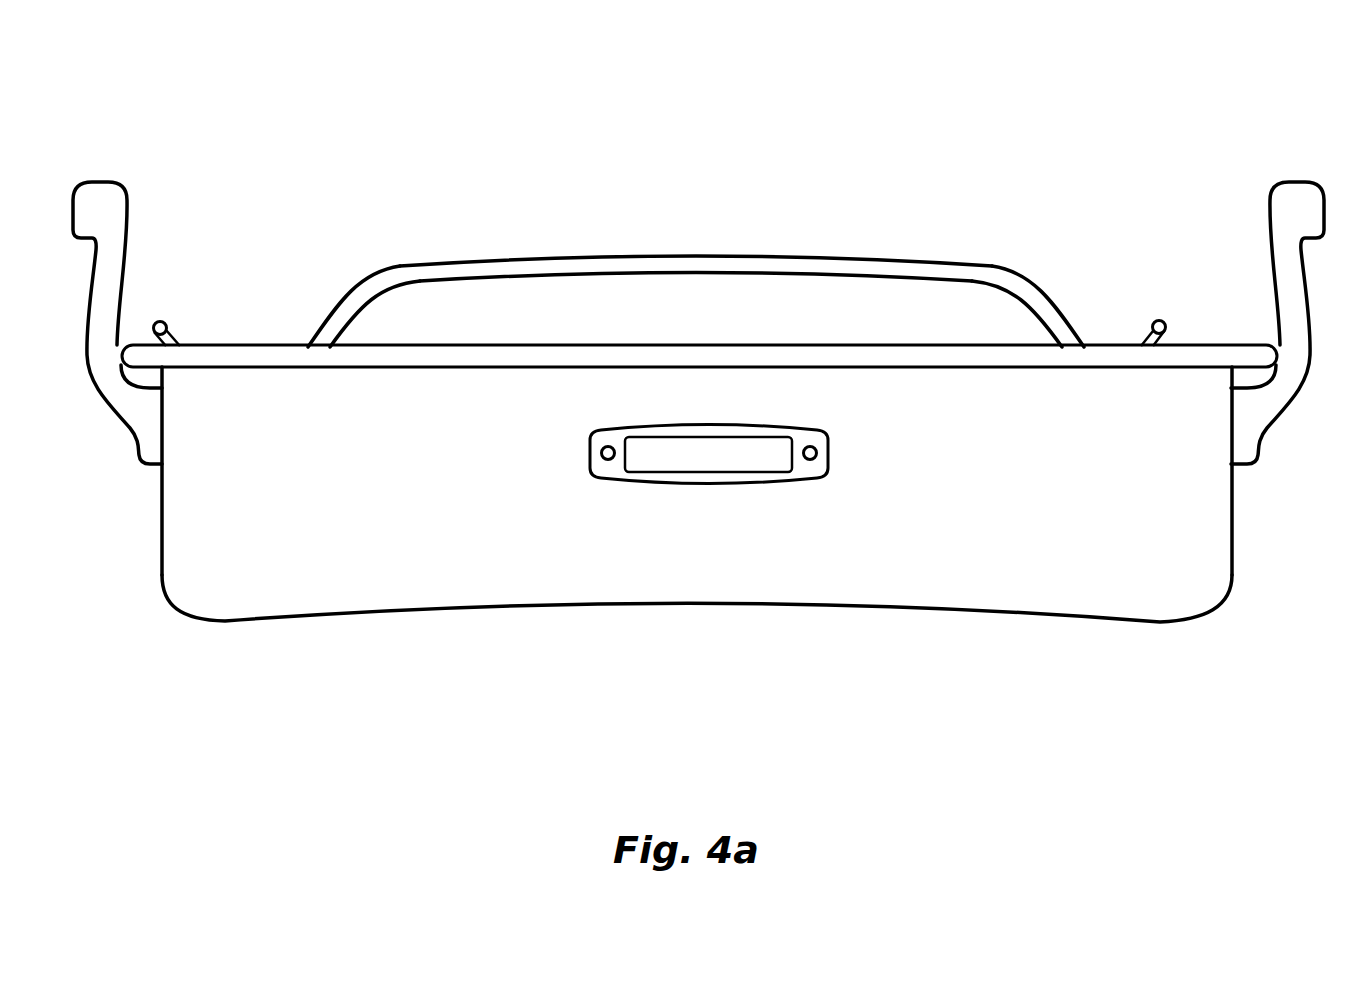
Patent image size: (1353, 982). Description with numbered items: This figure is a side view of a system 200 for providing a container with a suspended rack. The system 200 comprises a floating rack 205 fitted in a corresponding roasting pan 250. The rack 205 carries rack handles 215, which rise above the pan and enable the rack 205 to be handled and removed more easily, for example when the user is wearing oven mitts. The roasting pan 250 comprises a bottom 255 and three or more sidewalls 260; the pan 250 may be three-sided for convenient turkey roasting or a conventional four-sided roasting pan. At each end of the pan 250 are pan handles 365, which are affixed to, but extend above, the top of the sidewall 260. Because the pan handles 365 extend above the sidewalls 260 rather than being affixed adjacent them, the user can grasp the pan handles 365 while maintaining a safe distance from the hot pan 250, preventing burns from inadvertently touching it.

The system 200 is at (221, 116).
The floating rack 205 is at (613, 242).
The rack handles 215 is at (753, 250).
The roasting pan 250 is at (229, 330).
The bottom 255 is at (397, 618).
The sidewalls 260 is at (160, 503).
The pan handles 365 is at (127, 183).